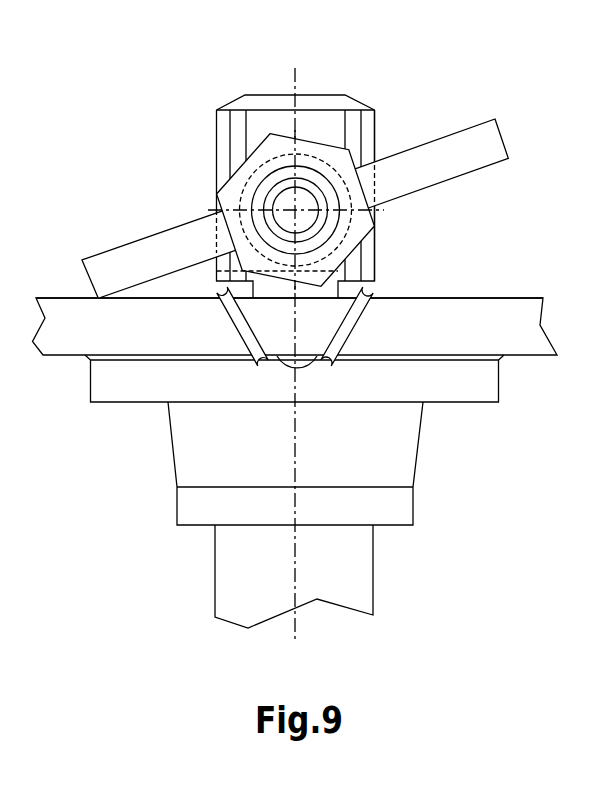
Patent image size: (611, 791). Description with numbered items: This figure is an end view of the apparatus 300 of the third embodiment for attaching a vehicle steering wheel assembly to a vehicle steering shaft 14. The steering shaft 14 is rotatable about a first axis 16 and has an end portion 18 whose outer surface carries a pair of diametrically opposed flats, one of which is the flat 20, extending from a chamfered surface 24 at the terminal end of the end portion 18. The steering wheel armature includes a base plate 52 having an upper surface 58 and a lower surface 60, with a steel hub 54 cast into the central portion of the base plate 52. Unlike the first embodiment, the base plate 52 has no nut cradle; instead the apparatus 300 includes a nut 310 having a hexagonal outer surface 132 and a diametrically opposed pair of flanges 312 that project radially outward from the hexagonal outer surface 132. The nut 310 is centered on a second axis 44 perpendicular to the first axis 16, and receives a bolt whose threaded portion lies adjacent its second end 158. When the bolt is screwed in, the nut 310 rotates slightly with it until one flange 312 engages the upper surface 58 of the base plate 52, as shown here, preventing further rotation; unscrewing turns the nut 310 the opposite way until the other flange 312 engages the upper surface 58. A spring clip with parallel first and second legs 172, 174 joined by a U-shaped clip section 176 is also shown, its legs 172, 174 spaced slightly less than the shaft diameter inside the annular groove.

The apparatus 300 is at (188, 110).
The nut 310 is at (285, 129).
The flat 20 is at (357, 164).
The chamfered surface 24 is at (362, 103).
The end portion 18 is at (378, 130).
The flanges 312 is at (477, 148).
The second axis 44 is at (292, 207).
The second end 158 is at (307, 220).
The hexagonal outer surface 132 is at (362, 258).
The upper surface 58 is at (522, 297).
The base plate 52 is at (530, 332).
The lower surface 60 is at (530, 357).
The steel hub 54 is at (398, 512).
The vehicle steering shaft 14 is at (376, 582).
The first axis 16 is at (295, 636).
The clip section 176 is at (310, 366).
The first leg 172 is at (350, 325).
The second leg 174 is at (242, 325).